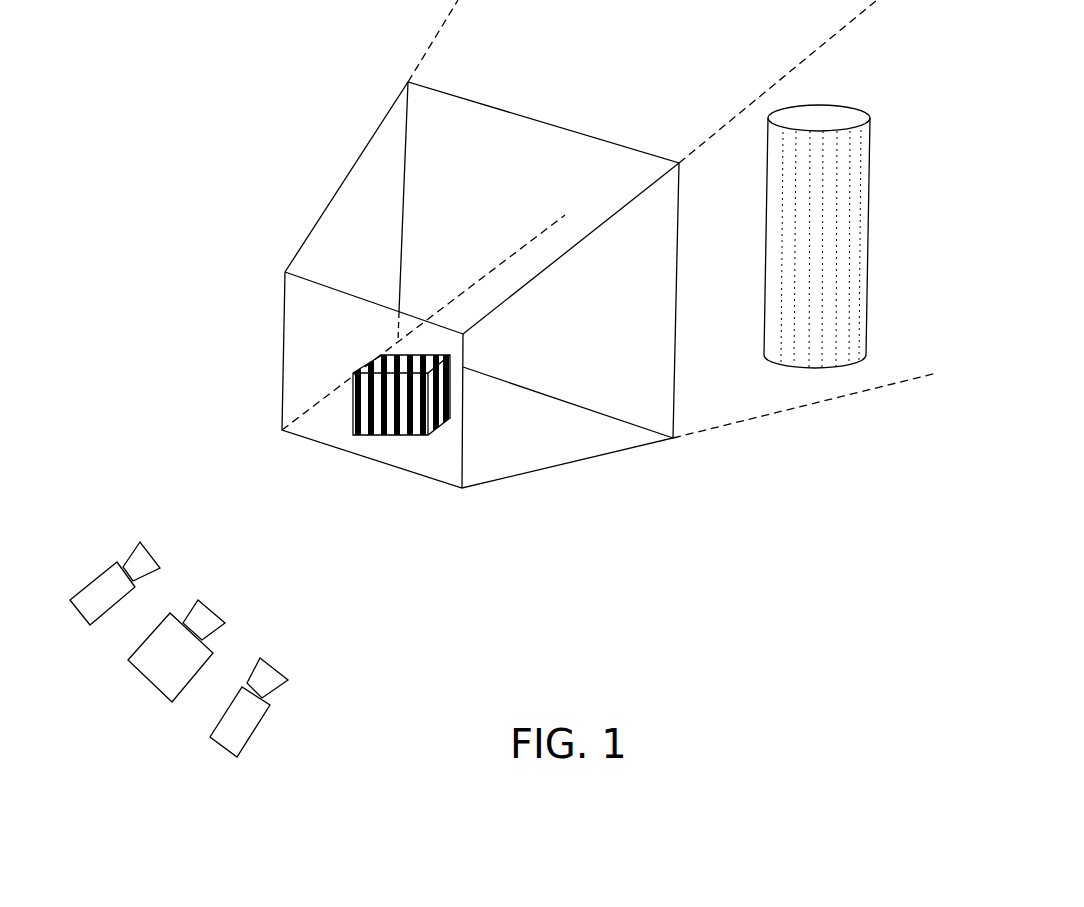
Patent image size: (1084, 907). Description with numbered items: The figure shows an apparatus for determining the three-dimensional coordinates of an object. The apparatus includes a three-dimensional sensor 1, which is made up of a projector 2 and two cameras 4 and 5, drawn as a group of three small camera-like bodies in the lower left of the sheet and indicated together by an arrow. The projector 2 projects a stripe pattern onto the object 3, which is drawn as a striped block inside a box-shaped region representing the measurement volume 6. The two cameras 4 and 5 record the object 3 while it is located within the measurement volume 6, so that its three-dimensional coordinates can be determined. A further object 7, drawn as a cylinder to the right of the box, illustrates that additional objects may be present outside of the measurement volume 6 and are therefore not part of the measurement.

The 3D sensor 1 is at (332, 678).
The projector 2 is at (165, 670).
The object 3 is at (372, 418).
The camera 4 is at (93, 608).
The camera 5 is at (230, 725).
The measurement volume 6 is at (642, 397).
The further object 7 is at (837, 337).